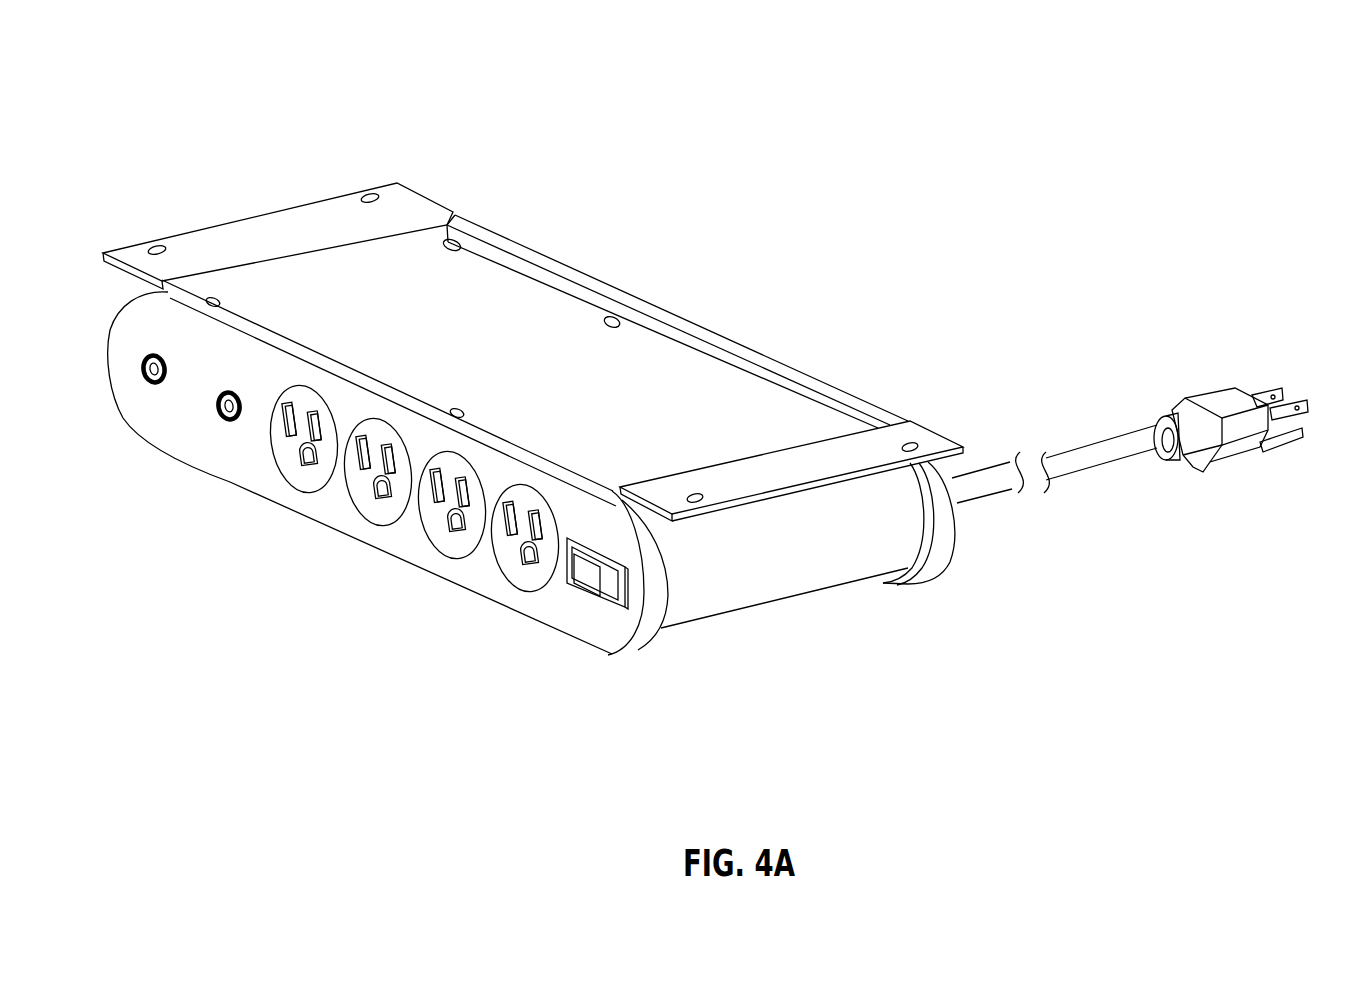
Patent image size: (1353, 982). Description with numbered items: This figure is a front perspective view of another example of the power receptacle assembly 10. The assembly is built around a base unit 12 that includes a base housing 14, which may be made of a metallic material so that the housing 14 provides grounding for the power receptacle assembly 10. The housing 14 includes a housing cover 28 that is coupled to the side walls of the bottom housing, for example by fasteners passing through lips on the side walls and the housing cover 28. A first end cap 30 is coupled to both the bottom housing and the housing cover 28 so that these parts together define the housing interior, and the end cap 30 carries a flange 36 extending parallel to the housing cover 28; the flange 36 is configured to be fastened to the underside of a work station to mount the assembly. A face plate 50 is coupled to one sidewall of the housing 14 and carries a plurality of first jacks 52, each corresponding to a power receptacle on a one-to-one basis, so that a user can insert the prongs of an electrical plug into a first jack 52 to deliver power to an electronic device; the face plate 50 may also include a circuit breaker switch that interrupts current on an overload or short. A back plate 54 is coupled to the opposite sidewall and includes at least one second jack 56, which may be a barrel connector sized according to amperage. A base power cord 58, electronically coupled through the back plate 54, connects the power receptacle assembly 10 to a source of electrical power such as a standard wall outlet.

The power receptacle assembly 10 is at (912, 108).
The base unit 12 is at (797, 360).
The base housing 14 is at (500, 287).
The housing cover 28 is at (571, 330).
The first end cap 30 is at (703, 570).
The flange 36 is at (412, 200).
The face plate 50 is at (220, 455).
The first jack 52 is at (383, 516).
The back plate 54 is at (945, 553).
The second jack 56 is at (218, 402).
The base power cord 58 is at (1090, 455).